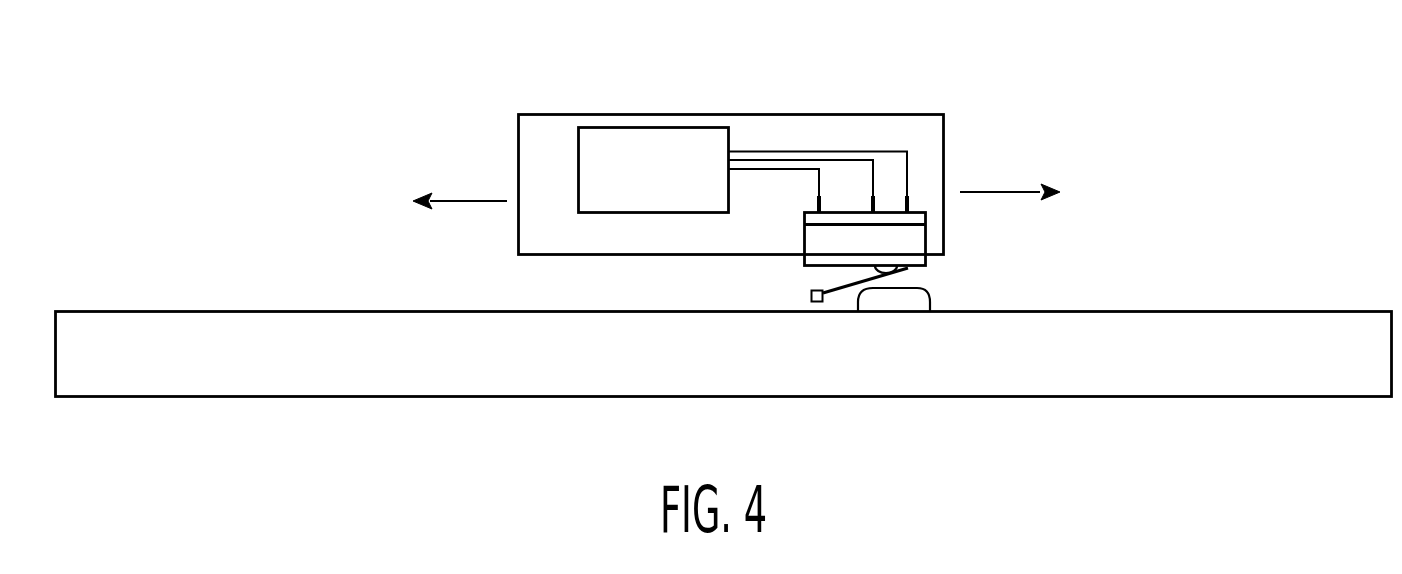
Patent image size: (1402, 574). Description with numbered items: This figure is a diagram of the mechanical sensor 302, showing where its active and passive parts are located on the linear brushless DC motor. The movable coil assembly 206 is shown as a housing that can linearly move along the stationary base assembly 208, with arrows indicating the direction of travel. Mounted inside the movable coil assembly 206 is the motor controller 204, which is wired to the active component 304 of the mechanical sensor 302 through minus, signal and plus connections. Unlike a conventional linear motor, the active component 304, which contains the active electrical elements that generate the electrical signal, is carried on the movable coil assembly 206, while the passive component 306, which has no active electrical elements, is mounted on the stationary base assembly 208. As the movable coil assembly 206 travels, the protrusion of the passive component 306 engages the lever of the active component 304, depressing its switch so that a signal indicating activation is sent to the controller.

The motor controller 204 is at (608, 140).
The movable coil assembly 206 is at (916, 114).
The stationary base assembly 208 is at (1287, 313).
The mechanical sensor 302 is at (963, 264).
The active component 304 is at (803, 262).
The passive component 306 is at (928, 300).